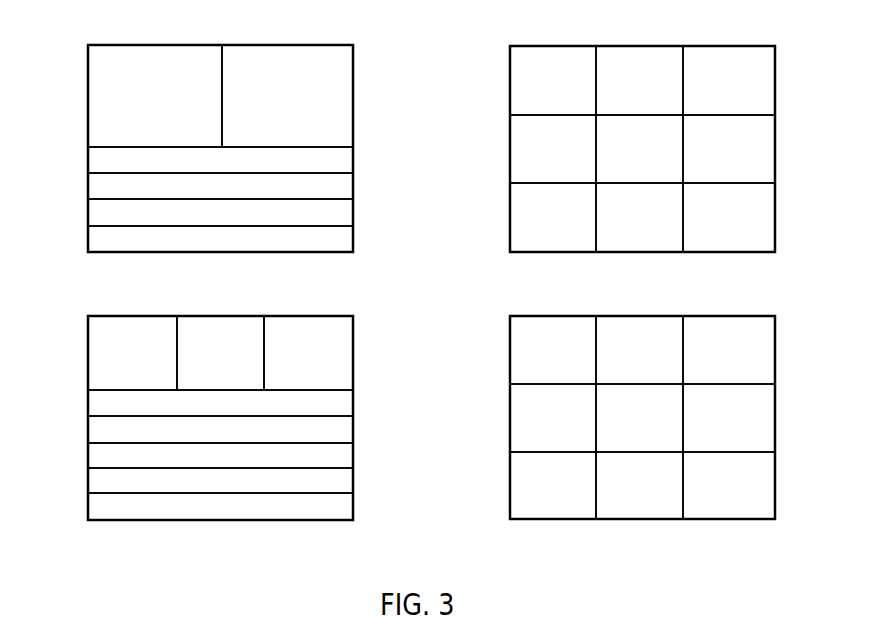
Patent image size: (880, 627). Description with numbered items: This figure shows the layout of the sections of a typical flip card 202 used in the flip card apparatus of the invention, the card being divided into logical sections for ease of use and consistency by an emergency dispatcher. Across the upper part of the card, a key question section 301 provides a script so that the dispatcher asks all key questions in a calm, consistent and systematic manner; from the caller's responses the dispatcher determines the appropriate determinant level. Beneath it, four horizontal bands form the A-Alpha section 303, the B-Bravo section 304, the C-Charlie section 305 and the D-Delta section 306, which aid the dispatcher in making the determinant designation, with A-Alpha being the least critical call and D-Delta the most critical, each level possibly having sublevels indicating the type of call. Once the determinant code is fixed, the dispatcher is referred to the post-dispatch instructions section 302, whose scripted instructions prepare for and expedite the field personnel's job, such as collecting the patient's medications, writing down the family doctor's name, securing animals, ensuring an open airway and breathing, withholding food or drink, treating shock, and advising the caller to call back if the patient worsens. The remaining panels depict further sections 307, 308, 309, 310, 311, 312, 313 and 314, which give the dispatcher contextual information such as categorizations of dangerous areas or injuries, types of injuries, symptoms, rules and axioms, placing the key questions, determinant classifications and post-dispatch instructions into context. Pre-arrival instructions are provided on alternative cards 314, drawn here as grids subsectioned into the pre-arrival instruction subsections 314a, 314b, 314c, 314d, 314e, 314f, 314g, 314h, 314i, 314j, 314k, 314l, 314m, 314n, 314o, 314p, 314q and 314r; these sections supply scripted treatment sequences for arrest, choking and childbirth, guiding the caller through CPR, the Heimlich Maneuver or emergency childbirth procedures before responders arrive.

The flip card 202 is at (88, 89).
The key question section 301 is at (168, 57).
The post-dispatch instructions section 302 is at (337, 96).
The A-Alpha section 303 is at (329, 162).
The B-Bravo section 304 is at (332, 186).
The C-Charlie section 305 is at (337, 212).
The D-Delta section 306 is at (337, 240).
The dispatcher information section 307 is at (332, 358).
The dispatcher information section 308 is at (225, 322).
The dispatcher information section 309 is at (110, 348).
The dispatcher information section 310 is at (328, 403).
The dispatcher information section 311 is at (328, 431).
The dispatcher information section 312 is at (332, 456).
The dispatcher information section 313 is at (335, 481).
The pre-arrival instruction sections 314 is at (337, 510).
The pre-arrival instruction subsection 314a is at (535, 73).
The pre-arrival instruction subsection 314b is at (534, 148).
The pre-arrival instruction subsection 314c is at (530, 215).
The pre-arrival instruction subsection 314d is at (620, 52).
The pre-arrival instruction subsection 314e is at (649, 122).
The pre-arrival instruction subsection 314f is at (763, 77).
The pre-arrival instruction subsection 314g is at (757, 140).
The pre-arrival instruction subsection 314h is at (752, 203).
The pre-arrival instruction subsection 314i is at (639, 233).
The pre-arrival instruction subsection 314j is at (535, 349).
The pre-arrival instruction subsection 314k is at (533, 422).
The pre-arrival instruction subsection 314l is at (531, 488).
The pre-arrival instruction subsection 314m is at (620, 326).
The pre-arrival instruction subsection 314n is at (649, 397).
The pre-arrival instruction subsection 314o is at (763, 351).
The pre-arrival instruction subsection 314p is at (757, 416).
The pre-arrival instruction subsection 314q is at (752, 478).
The pre-arrival instruction subsection 314r is at (639, 507).